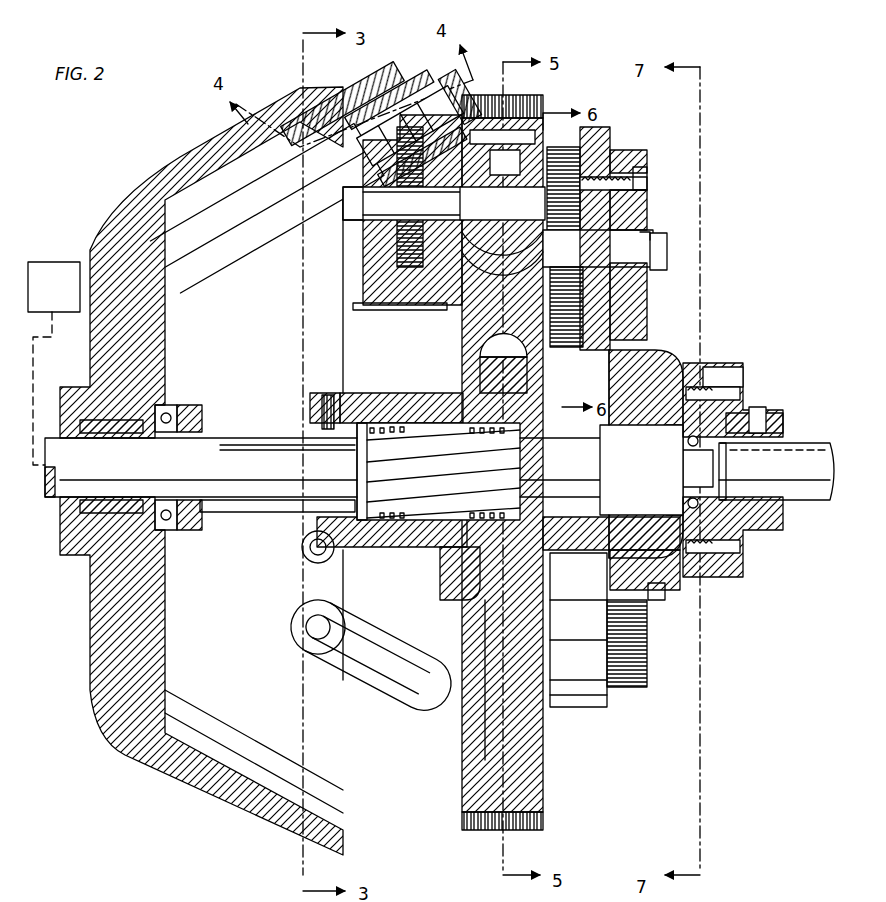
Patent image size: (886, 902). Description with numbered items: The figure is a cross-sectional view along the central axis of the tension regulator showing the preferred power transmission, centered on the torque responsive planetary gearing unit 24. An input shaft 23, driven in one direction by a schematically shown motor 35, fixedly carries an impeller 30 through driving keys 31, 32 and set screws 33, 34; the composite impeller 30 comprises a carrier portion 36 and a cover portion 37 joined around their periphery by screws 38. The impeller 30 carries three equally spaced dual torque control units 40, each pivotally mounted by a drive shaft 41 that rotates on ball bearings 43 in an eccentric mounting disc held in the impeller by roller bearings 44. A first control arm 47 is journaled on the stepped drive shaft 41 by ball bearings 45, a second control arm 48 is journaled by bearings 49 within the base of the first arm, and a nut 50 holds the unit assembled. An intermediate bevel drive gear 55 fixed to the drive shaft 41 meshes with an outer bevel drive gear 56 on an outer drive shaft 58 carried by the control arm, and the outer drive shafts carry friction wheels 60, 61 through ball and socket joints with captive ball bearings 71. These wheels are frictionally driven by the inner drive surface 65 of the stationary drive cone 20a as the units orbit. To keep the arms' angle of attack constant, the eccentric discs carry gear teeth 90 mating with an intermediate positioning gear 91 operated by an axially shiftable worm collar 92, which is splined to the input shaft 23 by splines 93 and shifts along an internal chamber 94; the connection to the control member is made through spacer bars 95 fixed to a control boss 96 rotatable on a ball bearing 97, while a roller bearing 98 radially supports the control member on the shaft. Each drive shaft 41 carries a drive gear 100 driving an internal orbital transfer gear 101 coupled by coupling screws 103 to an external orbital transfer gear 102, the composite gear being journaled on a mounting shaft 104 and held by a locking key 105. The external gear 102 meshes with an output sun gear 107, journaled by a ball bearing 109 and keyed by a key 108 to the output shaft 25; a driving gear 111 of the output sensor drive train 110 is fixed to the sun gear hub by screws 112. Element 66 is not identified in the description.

The drive cone 20a is at (105, 238).
The motor 35 is at (62, 350).
The inner drive surface 65 is at (205, 170).
The housing rim 66 is at (330, 782).
The friction wheel 60 is at (316, 182).
The outer bevel drive gear 56 is at (387, 67).
The outer drive shaft 58 is at (427, 108).
The captive ball bearings 71 is at (345, 78).
The first control arm 47 is at (443, 123).
The bearings 49 is at (402, 197).
The second control arm 48 is at (383, 308).
The nut 50 is at (353, 233).
The intermediate bevel drive gear 55 is at (397, 247).
The dual torque control unit 40 is at (403, 322).
The carrier portion 36 is at (530, 735).
The cover portion 37 is at (470, 747).
The screws 38 is at (517, 110).
The drive shaft 41 is at (502, 203).
The drive gear 100 is at (547, 200).
The ball bearings 43 is at (634, 265).
The internal orbital transfer gear 101 is at (610, 140).
The coupling screws 103 is at (648, 180).
The external orbital transfer gear 102 is at (648, 212).
The locking key 105 is at (650, 236).
The mounting shaft 104 is at (645, 283).
The roller bearings 44 is at (478, 335).
The ball bearings 45 is at (460, 300).
The gear teeth 90 is at (490, 357).
The intermediate positioning gear 91 is at (500, 383).
The set screw 33 is at (310, 395).
The driving key 31 is at (313, 430).
The internal chamber 94 is at (593, 520).
The output sun gear 107 is at (660, 585).
The worm collar 92 is at (500, 470).
The input shaft 23 is at (225, 420).
The spacer bars 95 is at (275, 515).
The splines 93 is at (610, 476).
The driving key 32 is at (668, 440).
The ball bearing 97 is at (167, 407).
The control boss 96 is at (187, 530).
The roller bearing 98 is at (107, 493).
The friction wheel 61 is at (305, 572).
The set screw 34 is at (666, 370).
The output sensor drive train 110 is at (720, 485).
The driving gear 111 is at (719, 383).
The screws 112 is at (736, 390).
The ball bearing 109 is at (755, 410).
The key 108 is at (786, 440).
The output shaft 25 is at (826, 460).
The impeller 30 is at (453, 782).
The planetary gearing unit 24 is at (589, 782).